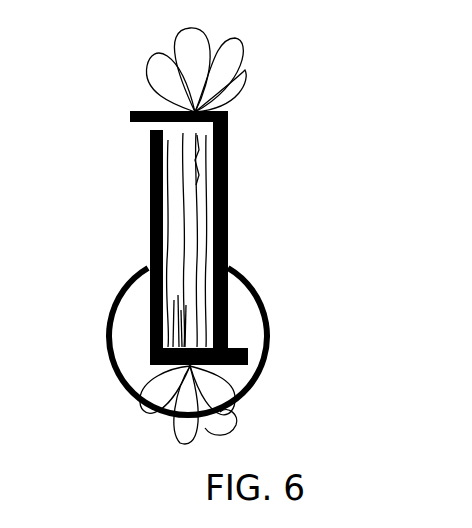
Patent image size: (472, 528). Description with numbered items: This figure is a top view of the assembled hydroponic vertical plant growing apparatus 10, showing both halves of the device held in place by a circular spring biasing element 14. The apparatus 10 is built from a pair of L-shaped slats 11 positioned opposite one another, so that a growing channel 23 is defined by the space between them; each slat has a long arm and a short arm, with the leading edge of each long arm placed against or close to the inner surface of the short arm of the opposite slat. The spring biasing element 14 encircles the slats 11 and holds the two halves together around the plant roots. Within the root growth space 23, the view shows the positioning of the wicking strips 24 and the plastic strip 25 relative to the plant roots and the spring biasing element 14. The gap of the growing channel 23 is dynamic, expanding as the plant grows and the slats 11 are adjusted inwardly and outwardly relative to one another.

The hydroponic vertical plant growing apparatus 10 is at (265, 152).
The L-shaped slats 11 is at (147, 140).
The circular spring biasing element 14 is at (106, 368).
The growing channel 23 is at (179, 210).
The wicking strips 24 is at (206, 269).
The plastic strip 25 is at (192, 288).